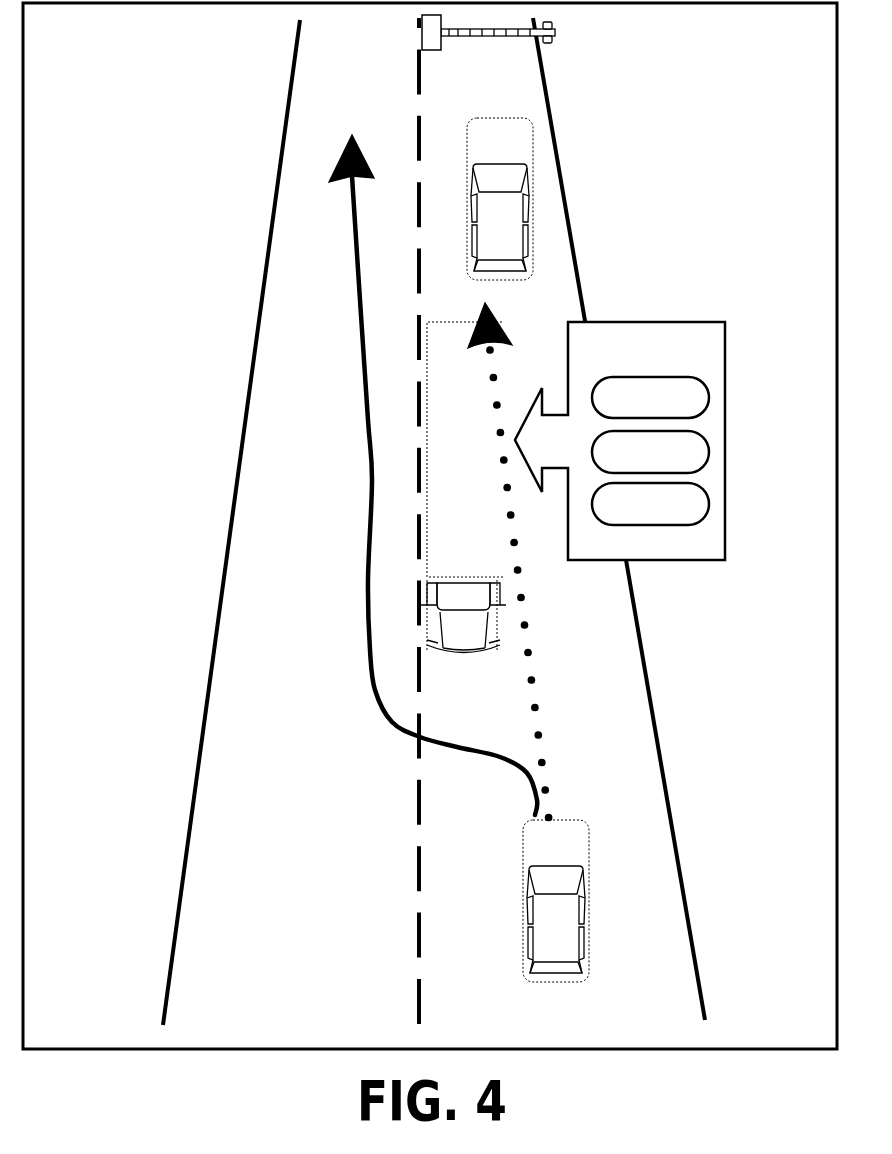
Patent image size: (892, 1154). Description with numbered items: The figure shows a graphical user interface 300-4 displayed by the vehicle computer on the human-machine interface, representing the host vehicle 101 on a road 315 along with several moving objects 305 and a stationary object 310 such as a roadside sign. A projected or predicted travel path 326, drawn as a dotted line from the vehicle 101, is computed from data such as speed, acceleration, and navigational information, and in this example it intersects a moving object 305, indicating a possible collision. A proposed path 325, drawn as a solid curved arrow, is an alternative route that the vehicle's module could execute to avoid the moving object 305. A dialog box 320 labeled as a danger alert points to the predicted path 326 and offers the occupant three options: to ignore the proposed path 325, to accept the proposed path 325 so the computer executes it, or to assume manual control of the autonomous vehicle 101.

The graphical user interface 300-4 is at (430, 526).
The road 315 is at (434, 523).
The stationary object 310 is at (488, 37).
The moving objects 305 is at (428, 636).
The vehicle 101 is at (556, 901).
The proposed path 325 is at (358, 505).
The predicted travel path 326 is at (556, 652).
The dialog box 320 is at (620, 441).